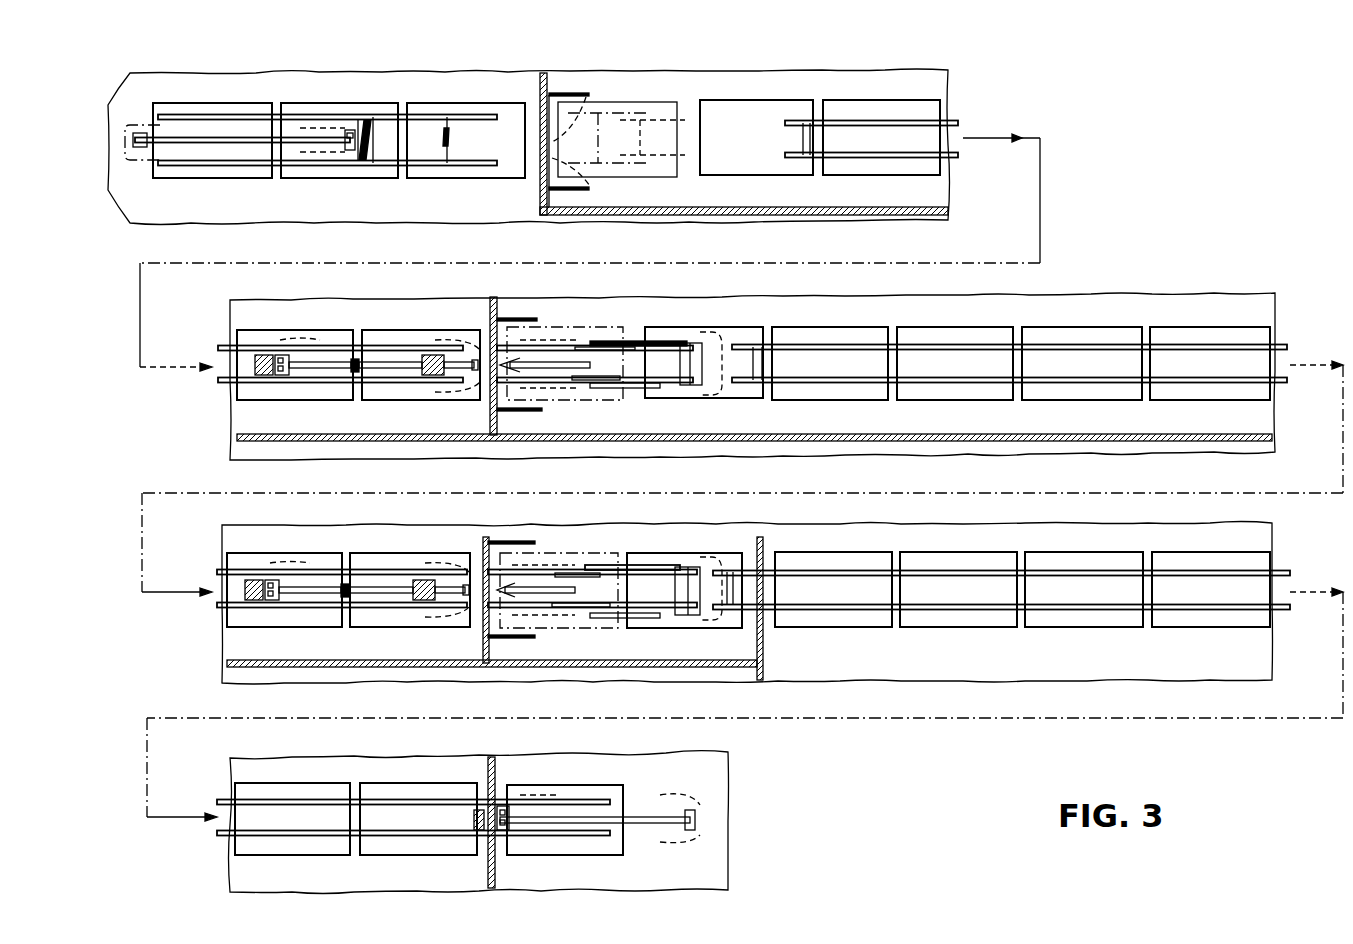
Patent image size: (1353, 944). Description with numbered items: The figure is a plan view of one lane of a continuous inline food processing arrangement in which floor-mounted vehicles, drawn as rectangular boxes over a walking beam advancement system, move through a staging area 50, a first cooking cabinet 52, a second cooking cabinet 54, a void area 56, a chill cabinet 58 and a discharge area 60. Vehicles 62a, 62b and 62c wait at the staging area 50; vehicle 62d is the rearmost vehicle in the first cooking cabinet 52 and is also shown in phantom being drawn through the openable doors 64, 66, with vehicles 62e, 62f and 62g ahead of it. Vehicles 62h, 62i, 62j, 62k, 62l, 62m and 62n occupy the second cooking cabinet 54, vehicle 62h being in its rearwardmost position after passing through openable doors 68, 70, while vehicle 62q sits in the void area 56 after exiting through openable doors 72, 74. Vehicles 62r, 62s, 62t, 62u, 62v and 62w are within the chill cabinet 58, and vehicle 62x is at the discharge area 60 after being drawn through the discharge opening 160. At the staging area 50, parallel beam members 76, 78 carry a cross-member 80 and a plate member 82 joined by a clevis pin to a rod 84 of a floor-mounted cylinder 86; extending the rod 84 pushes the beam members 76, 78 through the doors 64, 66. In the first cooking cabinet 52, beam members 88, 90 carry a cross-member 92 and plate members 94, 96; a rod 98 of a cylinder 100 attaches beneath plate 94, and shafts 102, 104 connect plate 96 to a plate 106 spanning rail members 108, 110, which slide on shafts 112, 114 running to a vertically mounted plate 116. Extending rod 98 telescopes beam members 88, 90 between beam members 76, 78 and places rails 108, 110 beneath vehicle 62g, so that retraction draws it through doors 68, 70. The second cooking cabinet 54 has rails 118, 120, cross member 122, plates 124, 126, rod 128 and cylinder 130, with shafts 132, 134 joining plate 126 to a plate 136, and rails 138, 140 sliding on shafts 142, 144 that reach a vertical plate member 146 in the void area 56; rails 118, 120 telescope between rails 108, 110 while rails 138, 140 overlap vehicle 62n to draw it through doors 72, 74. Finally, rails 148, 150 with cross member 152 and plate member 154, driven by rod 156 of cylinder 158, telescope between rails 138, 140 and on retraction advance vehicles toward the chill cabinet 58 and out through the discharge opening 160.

The staging area 50 is at (324, 197).
The first cooking cabinet 52 is at (702, 225).
The second cooking cabinet 54 is at (755, 446).
The void area 56 is at (606, 645).
The chill cabinet 58 is at (1023, 654).
The discharge area 60 is at (562, 872).
The vehicle 62a is at (206, 104).
The vehicle 62b is at (317, 104).
The vehicle 62c is at (416, 104).
The vehicle 62d is at (732, 100).
The vehicle 62e is at (850, 100).
The vehicle 62f is at (262, 330).
The vehicle 62g is at (386, 330).
The vehicle 62h is at (696, 327).
The vehicle 62i is at (813, 327).
The vehicle 62j is at (928, 327).
The vehicle 62k is at (1062, 327).
The vehicle 62l is at (1172, 327).
The vehicle 62m is at (259, 553).
The vehicle 62n is at (358, 553).
The vehicle 62q is at (670, 630).
The vehicle 62r is at (790, 552).
The vehicle 62s is at (930, 552).
The vehicle 62t is at (1073, 552).
The vehicle 62u is at (1166, 552).
The vehicle 62v is at (281, 784).
The vehicle 62w is at (381, 783).
The vehicle 62x is at (582, 785).
The openable door 64 is at (577, 97).
The openable door 66 is at (578, 190).
The openable door 68 is at (516, 318).
The openable door 70 is at (518, 412).
The openable door 72 is at (505, 540).
The openable door 74 is at (512, 640).
The beam member 76 is at (476, 121).
The beam member 78 is at (477, 160).
The cross-member 80 is at (437, 148).
The plate member 82 is at (378, 152).
The rod 84 is at (345, 150).
The cylinder 86 is at (252, 155).
The beam member 88 is at (958, 120).
The beam member 90 is at (958, 160).
The cross-member 92 is at (800, 140).
The plate member 94 is at (262, 378).
The plate member 96 is at (430, 378).
The rod 98 is at (282, 378).
The cylinder 100 is at (357, 385).
The shaft 102 is at (542, 340).
The shaft 104 is at (548, 384).
The plate 106 is at (690, 372).
The rail member 108 is at (628, 341).
The rail member 110 is at (633, 392).
The shaft 112 is at (585, 346).
The shaft 114 is at (583, 383).
The vertically mounted plate 116 is at (715, 372).
The rail 118 is at (792, 350).
The rail 120 is at (838, 378).
The cross member 122 is at (762, 350).
The plate 124 is at (252, 603).
The plate 126 is at (420, 603).
The rod 128 is at (272, 603).
The cylinder 130 is at (347, 612).
The shaft 132 is at (532, 562).
The shaft 134 is at (538, 600).
The plate 136 is at (688, 565).
The rail 138 is at (605, 565).
The rail 140 is at (596, 618).
The shaft 142 is at (565, 573).
The shaft 144 is at (568, 608).
The vertical plate member 146 is at (713, 580).
The rail 148 is at (862, 572).
The rail 150 is at (860, 608).
The cross member 152 is at (732, 612).
The plate member 154 is at (472, 832).
The rod 156 is at (503, 805).
The cylinder 158 is at (617, 840).
The discharge opening 160 is at (495, 888).